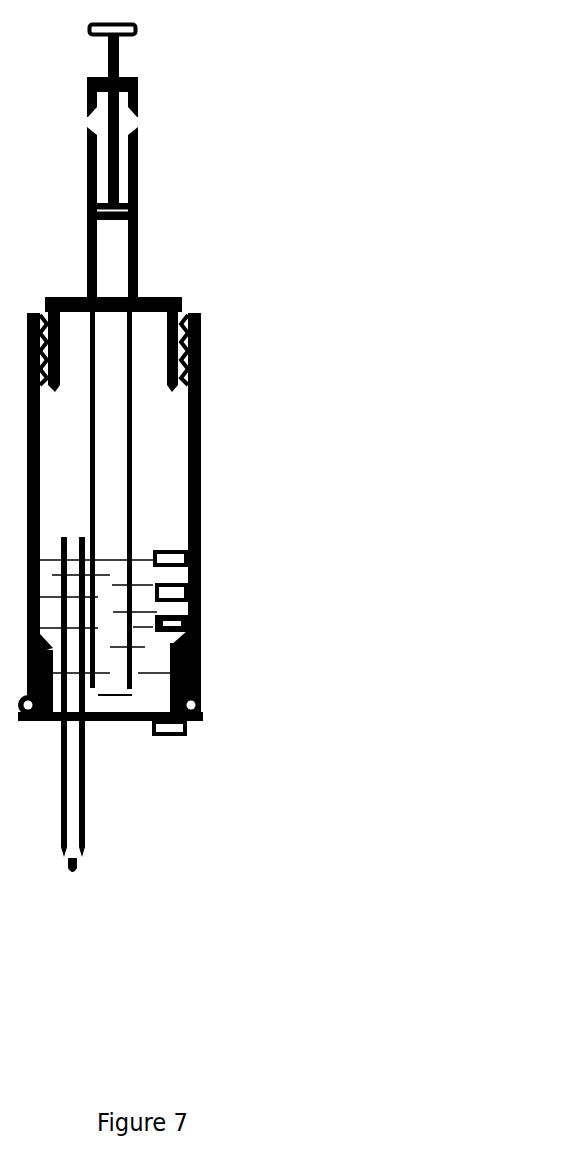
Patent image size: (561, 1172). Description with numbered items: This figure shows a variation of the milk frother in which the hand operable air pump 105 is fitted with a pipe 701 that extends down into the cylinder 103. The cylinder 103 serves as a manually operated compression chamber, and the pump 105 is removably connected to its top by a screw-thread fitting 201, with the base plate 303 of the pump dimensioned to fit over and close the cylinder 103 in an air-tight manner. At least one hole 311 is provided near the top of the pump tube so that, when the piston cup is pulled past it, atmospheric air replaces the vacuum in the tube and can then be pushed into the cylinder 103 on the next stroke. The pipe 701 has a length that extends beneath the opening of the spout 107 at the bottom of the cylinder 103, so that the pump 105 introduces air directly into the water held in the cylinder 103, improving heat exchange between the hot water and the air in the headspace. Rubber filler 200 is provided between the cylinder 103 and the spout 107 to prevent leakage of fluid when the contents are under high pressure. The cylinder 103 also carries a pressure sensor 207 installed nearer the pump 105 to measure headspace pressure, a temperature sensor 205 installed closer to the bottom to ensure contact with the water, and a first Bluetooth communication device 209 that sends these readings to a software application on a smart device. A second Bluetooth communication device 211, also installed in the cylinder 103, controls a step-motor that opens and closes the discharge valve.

The hand operable air pump 105 is at (299, 116).
The hole 311 is at (147, 80).
The base plate 303 is at (187, 261).
The pipe 701 is at (116, 444).
The screw-thread fitting 201 is at (192, 310).
The cylinder 103 is at (322, 423).
The pressure sensor 207 is at (210, 546).
The first Bluetooth communication device 209 is at (209, 583).
The temperature sensor 205 is at (209, 616).
The rubber filler 200 is at (212, 703).
The second Bluetooth communication device 211 is at (193, 746).
The spout 107 is at (328, 707).